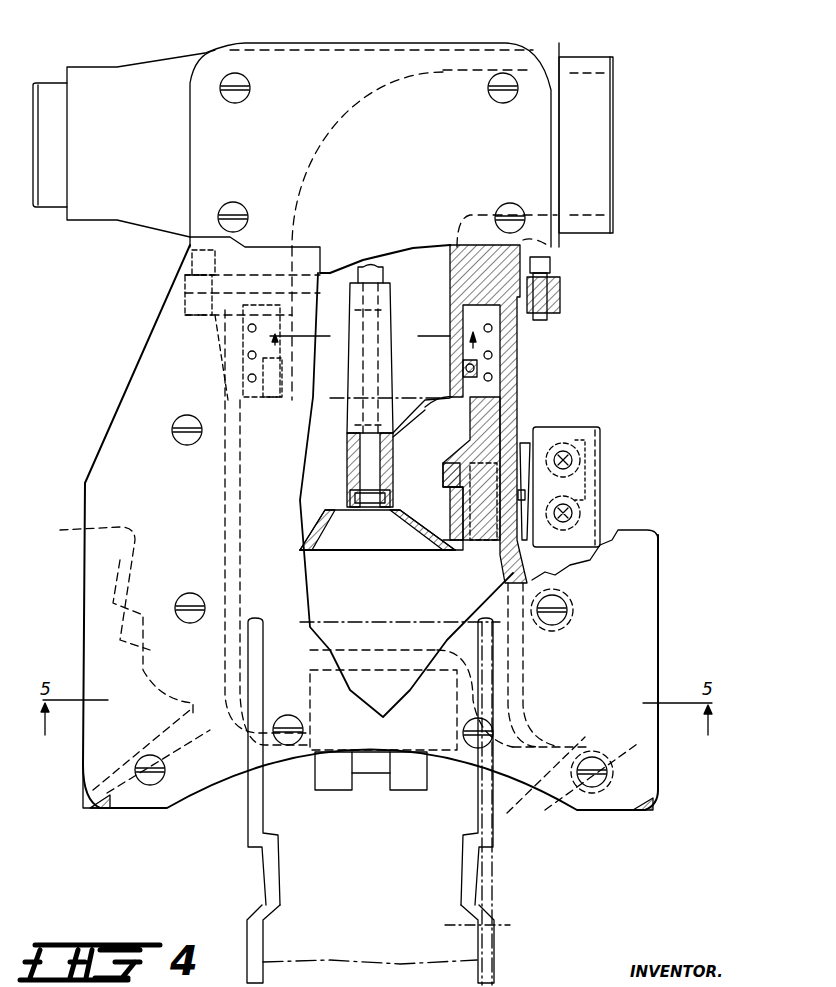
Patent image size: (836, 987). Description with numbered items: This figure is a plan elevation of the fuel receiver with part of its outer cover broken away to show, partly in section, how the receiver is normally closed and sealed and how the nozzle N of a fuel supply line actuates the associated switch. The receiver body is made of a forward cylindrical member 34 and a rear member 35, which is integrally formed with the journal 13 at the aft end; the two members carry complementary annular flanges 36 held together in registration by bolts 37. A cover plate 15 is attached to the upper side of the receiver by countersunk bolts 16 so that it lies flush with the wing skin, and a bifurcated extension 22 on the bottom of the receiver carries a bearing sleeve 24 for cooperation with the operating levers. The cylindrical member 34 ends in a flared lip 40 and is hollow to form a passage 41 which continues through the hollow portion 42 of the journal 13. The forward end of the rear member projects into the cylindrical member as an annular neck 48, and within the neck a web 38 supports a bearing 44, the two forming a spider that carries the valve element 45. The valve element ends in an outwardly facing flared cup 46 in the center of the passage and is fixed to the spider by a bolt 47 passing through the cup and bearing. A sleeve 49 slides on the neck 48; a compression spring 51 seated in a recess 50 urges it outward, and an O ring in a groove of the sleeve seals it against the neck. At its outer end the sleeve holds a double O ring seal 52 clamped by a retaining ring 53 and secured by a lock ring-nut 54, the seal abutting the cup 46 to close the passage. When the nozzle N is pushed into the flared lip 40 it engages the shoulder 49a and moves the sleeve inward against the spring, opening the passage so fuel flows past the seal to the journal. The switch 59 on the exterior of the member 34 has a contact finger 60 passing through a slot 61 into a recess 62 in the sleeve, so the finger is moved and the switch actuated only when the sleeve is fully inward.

The journal 13 is at (608, 105).
The cover plate 15 is at (640, 588).
The bolts 16 is at (238, 73).
The bifurcated extension 22 is at (412, 783).
The bearing sleeve 24 is at (375, 775).
The forward cylindrical member 34 is at (512, 575).
The rear member 35 is at (190, 255).
The annular flanges 36 is at (185, 300).
The bolts 37 is at (205, 332).
The web 38 is at (423, 273).
The flared lip 40 is at (359, 533).
The passage 41 is at (392, 615).
The passage 42 is at (443, 70).
The bearing 44 is at (393, 375).
The valve element 45 is at (395, 428).
The flared cup 46 is at (428, 530).
The bolt 47 is at (360, 458).
The annular neck 48 is at (452, 332).
The sleeve 49 is at (508, 415).
The projecting shoulder 49a is at (445, 438).
The recess 50 is at (482, 405).
The compression spring 51 is at (555, 300).
The double O ring seal 52 is at (468, 547).
The retaining ring 53 is at (450, 512).
The lock ring-nut 54 is at (455, 470).
The electrical switch 59 is at (601, 488).
The contact finger 60 is at (483, 501).
The slot 61 is at (510, 413).
The recess 62 is at (493, 437).
The nozzle N is at (487, 926).